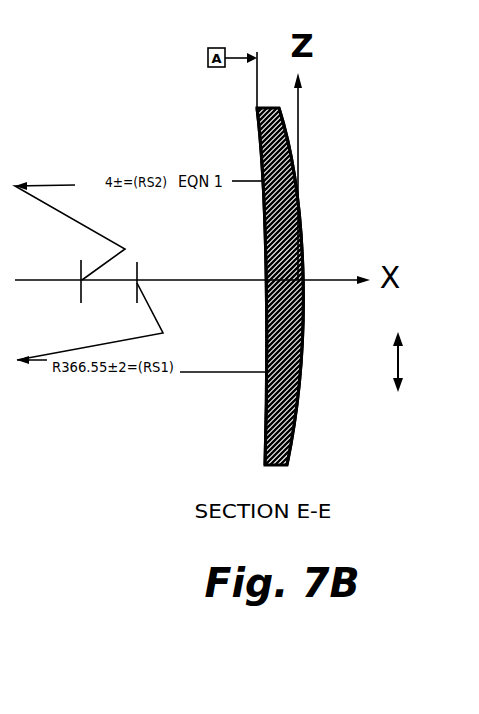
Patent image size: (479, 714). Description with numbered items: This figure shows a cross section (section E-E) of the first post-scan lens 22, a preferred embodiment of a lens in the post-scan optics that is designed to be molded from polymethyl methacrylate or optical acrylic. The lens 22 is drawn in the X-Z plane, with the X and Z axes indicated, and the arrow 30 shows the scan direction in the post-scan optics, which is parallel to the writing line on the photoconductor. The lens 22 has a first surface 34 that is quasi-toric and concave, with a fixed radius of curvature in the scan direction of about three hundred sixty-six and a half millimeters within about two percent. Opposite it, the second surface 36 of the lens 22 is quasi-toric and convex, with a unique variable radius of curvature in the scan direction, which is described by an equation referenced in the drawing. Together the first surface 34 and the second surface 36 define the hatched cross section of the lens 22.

The first post-scan lens 22 is at (362, 126).
The arrow indicating scan direction 30 is at (397, 362).
The first surface 34 is at (265, 392).
The second surface 36 is at (305, 243).